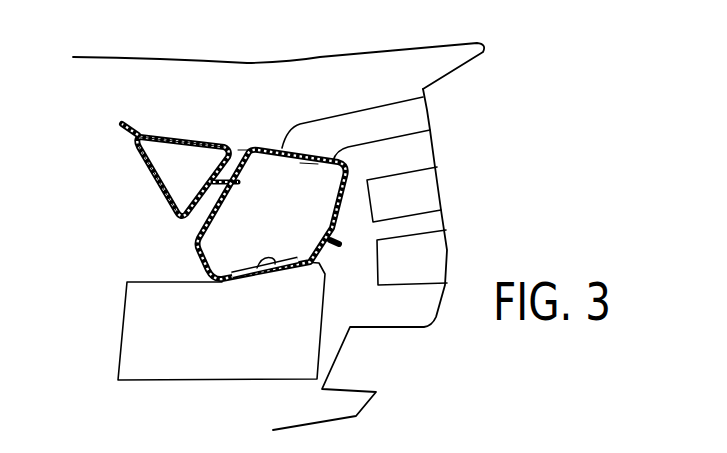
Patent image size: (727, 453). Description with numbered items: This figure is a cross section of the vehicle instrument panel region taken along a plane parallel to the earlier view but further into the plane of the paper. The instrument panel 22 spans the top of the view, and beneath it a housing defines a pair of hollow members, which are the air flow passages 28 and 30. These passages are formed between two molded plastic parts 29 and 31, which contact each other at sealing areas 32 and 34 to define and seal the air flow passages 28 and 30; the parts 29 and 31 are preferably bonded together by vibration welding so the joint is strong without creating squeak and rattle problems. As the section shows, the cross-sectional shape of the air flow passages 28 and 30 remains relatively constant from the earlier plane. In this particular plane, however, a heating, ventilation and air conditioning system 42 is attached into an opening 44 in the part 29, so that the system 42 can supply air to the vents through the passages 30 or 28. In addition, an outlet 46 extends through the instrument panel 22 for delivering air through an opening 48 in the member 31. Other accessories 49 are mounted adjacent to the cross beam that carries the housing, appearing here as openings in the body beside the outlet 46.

The instrument panel 22 is at (321, 56).
The air flow passage 28 is at (196, 173).
The molded plastic part 29 is at (164, 202).
The air flow passage 30 is at (276, 243).
The molded plastic part 31 is at (189, 133).
The sealing area 32 is at (241, 152).
The sealing area 34 is at (128, 140).
The heating, ventilation and air conditioning (HVAC) system 42 is at (136, 322).
The opening 44 is at (270, 270).
The outlet 46 is at (421, 113).
The opening 48 is at (309, 163).
The accessories 49 is at (432, 258).